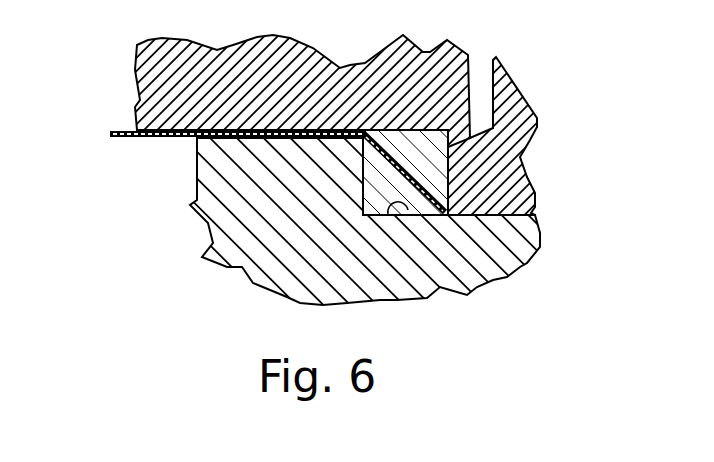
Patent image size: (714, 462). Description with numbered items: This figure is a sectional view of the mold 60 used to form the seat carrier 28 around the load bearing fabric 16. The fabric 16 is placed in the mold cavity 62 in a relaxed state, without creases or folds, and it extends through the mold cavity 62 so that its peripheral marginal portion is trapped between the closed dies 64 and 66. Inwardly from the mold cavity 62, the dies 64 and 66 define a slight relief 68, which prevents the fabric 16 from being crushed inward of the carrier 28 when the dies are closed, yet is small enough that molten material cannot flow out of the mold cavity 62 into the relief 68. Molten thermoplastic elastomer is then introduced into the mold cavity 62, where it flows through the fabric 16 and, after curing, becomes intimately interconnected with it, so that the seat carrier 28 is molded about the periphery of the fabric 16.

The mold 60 is at (357, 178).
The die 64 is at (137, 80).
The die 66 is at (522, 264).
The relief 68 is at (358, 195).
The mold cavity 62 is at (388, 212).
The load bearing fabric 16 is at (165, 138).
The seat carrier 28 is at (247, 140).